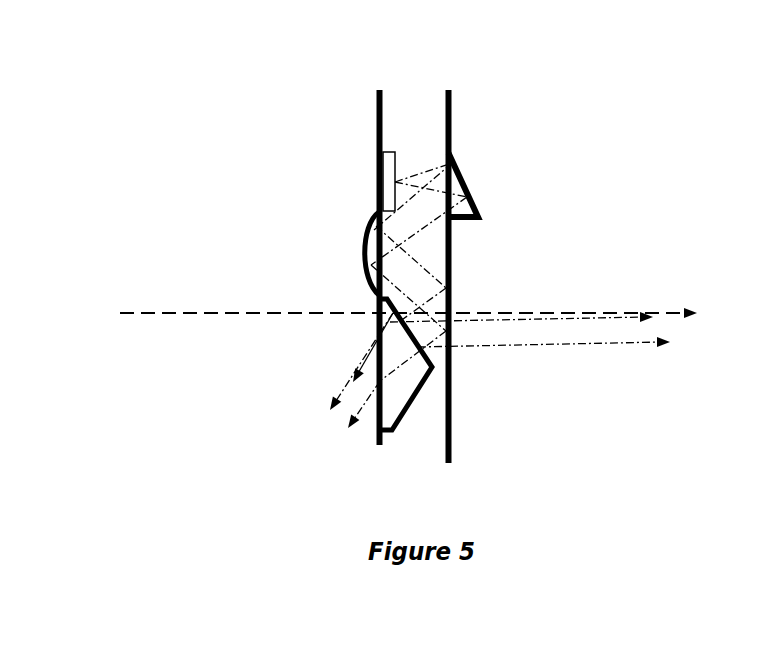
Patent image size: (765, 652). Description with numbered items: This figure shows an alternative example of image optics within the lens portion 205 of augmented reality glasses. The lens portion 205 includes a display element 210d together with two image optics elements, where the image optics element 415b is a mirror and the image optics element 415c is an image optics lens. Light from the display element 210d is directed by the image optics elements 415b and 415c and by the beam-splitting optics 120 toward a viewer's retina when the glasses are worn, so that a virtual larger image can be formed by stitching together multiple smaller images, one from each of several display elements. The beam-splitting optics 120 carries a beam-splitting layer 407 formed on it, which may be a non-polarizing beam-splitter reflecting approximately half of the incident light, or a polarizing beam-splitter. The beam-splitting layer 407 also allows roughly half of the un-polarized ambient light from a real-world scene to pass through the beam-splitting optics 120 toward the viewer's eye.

The lens portion 205 is at (398, 88).
The display element 210d is at (378, 181).
The image optics element 415b is at (468, 187).
The image optics element 415c is at (362, 275).
The beam-splitting layer 407 is at (432, 372).
The beam-splitting optics 120 is at (407, 382).